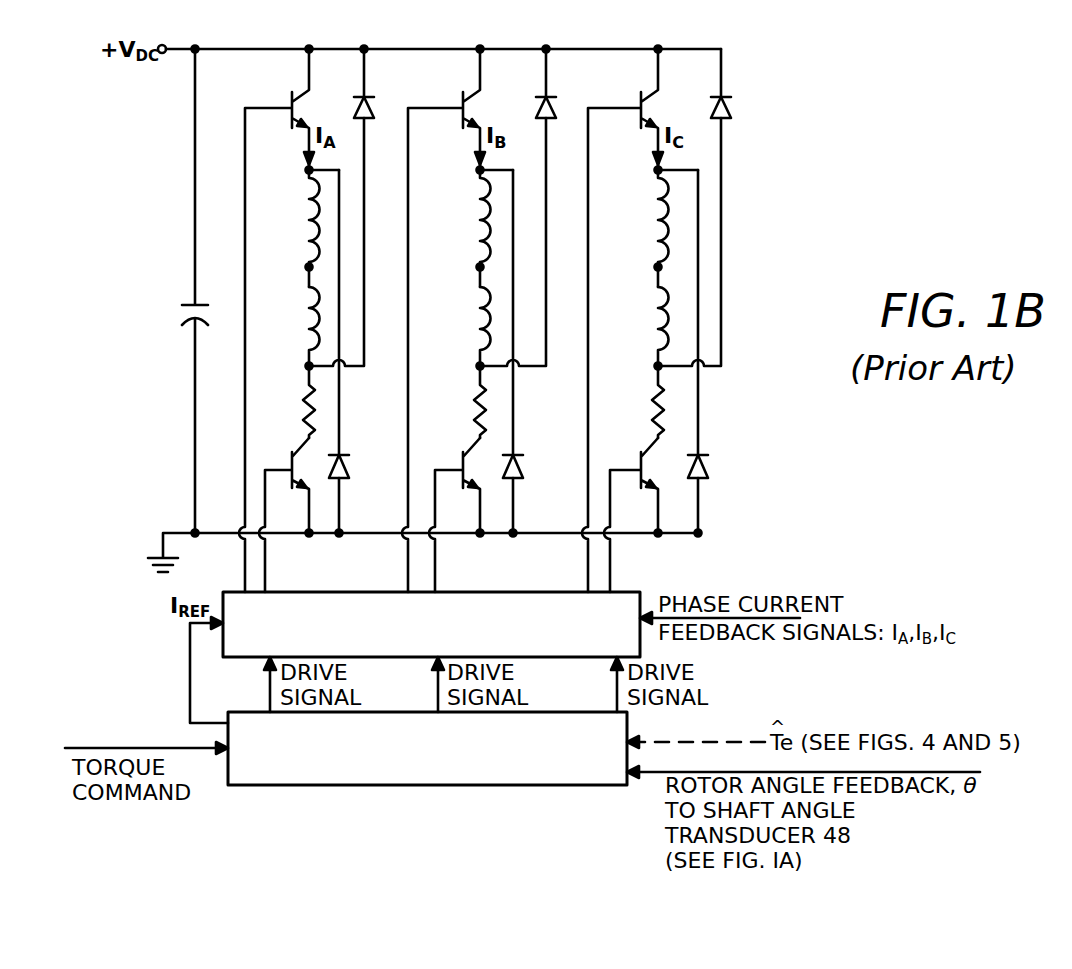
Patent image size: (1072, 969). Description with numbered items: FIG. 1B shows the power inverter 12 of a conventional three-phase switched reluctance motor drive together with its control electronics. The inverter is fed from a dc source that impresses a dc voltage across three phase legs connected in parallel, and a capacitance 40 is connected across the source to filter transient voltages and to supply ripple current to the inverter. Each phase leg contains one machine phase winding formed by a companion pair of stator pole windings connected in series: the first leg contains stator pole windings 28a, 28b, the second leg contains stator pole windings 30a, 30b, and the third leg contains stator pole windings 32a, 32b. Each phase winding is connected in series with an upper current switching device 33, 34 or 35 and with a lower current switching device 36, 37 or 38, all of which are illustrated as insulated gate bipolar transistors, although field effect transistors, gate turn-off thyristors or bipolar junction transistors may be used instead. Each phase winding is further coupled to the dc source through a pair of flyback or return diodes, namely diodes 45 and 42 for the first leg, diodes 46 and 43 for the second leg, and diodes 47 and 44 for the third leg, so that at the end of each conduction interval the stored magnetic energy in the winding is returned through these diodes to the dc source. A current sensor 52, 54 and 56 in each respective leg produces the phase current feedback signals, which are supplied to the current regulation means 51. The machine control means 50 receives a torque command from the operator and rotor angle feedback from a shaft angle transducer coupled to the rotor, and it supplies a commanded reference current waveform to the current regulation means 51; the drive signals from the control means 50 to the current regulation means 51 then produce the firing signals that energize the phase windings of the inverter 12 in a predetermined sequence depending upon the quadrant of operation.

The power inverter 12 is at (818, 91).
The upper current switching device 33 is at (303, 93).
The upper current switching device 34 is at (475, 92).
The upper current switching device 35 is at (652, 93).
The lower current switching device 36 is at (302, 448).
The lower current switching device 37 is at (473, 448).
The lower current switching device 38 is at (651, 448).
The capacitance 40 is at (190, 305).
The flyback diode 42 is at (356, 108).
The flyback diode 43 is at (538, 108).
The flyback diode 44 is at (725, 118).
The flyback diode 45 is at (348, 462).
The flyback diode 46 is at (522, 462).
The flyback diode 47 is at (705, 472).
The stator pole winding 28a is at (309, 222).
The stator pole winding 28b is at (309, 303).
The stator pole winding 30a is at (480, 222).
The stator pole winding 30b is at (480, 303).
The stator pole winding 32a is at (658, 222).
The stator pole winding 32b is at (658, 303).
The current sensor 52 is at (306, 396).
The current sensor 54 is at (477, 396).
The current sensor 56 is at (655, 396).
The current regulation means 51 is at (640, 590).
The machine control means 50 is at (548, 787).